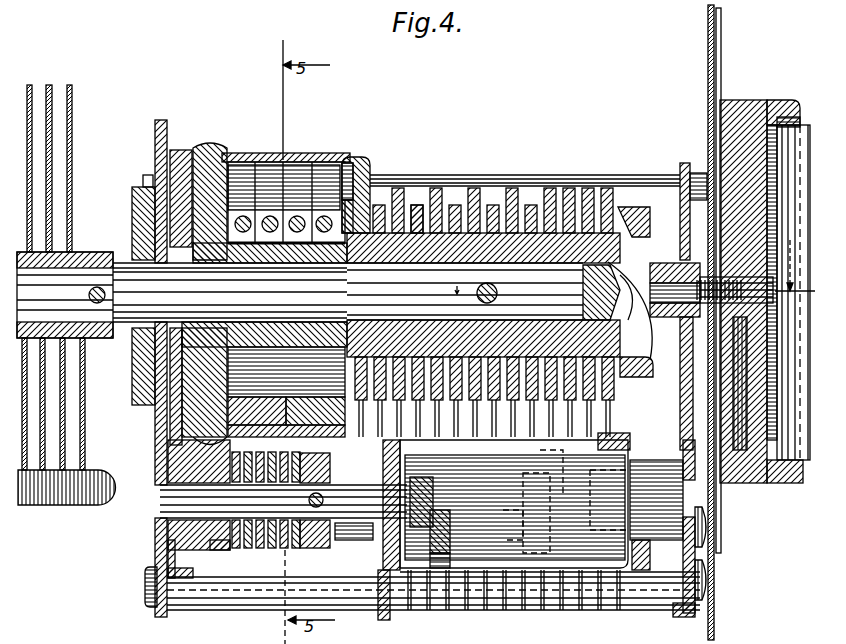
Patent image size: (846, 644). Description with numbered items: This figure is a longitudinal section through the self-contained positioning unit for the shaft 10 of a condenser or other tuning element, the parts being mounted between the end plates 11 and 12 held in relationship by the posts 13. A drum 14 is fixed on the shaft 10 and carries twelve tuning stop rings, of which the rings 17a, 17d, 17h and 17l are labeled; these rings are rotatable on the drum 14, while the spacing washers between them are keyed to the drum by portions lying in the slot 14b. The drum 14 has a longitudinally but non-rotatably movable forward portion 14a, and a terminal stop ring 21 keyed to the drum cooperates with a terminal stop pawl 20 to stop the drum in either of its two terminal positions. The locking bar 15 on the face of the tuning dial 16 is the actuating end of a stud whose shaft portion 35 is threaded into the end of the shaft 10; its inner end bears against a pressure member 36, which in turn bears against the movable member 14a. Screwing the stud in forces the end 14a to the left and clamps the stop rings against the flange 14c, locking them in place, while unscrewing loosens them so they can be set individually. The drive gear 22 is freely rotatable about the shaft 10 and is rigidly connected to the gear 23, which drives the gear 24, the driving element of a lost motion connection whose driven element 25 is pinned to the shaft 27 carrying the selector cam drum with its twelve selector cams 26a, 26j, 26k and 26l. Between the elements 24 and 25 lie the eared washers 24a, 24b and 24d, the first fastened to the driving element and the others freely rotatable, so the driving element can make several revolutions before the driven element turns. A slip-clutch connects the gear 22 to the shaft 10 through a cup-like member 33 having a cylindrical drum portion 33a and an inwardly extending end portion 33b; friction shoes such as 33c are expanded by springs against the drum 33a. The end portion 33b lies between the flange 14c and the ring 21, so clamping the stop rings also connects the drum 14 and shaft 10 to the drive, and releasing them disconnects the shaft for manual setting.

The shaft 10 is at (140, 295).
The end plate 11 is at (697, 172).
The end plate 12 is at (158, 122).
The posts 13 is at (462, 175).
The drum 14 is at (487, 245).
The forward portion of drum 14a is at (635, 208).
The slot 14b is at (415, 215).
The flange 14c is at (350, 215).
The locking bar 15 is at (803, 125).
The tuning dial 16 is at (747, 100).
The tuning stop ring 17a is at (607, 190).
The tuning stop ring 17d is at (550, 190).
The tuning stop ring 17h is at (474, 190).
The tuning stop ring 17l is at (398, 190).
The terminal stop pawl 20 is at (377, 562).
The terminal stop ring 21 is at (385, 197).
The gear 22 is at (212, 140).
The gear 23 is at (182, 150).
The gear 24 is at (186, 572).
The eared washer 24a is at (222, 555).
The eared washer 24b is at (278, 548).
The eared washer 24d is at (255, 548).
The driven element 25 is at (350, 540).
The selector cam 26a is at (622, 572).
The selector cam 26j is at (438, 553).
The selector cam 26k is at (425, 510).
The selector cam 26l is at (403, 476).
The shaft 27 is at (340, 495).
The cup-like member 33 is at (318, 153).
The cylindrical drum portion 33a is at (243, 185).
The inwardly extending end portion 33b is at (337, 153).
The friction shoe unit 33c is at (290, 165).
The threaded shaft portion 35 is at (688, 345).
The pressure member 36 is at (656, 246).